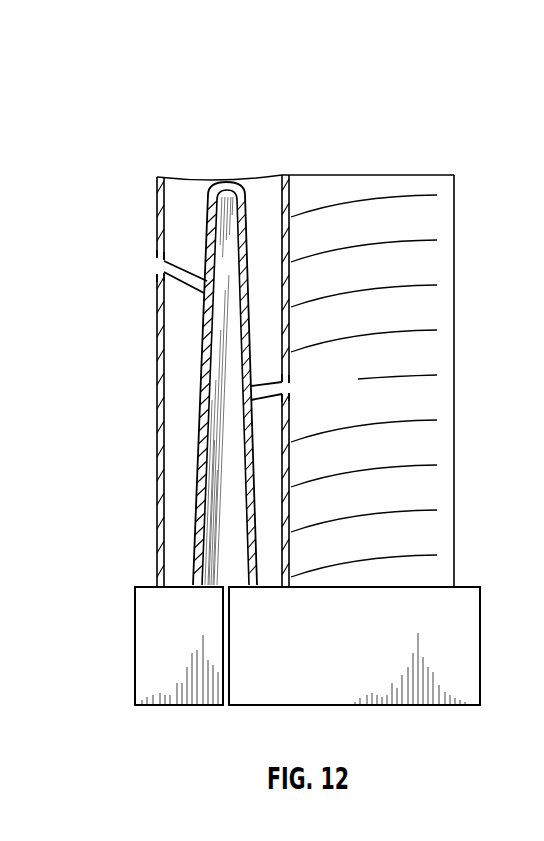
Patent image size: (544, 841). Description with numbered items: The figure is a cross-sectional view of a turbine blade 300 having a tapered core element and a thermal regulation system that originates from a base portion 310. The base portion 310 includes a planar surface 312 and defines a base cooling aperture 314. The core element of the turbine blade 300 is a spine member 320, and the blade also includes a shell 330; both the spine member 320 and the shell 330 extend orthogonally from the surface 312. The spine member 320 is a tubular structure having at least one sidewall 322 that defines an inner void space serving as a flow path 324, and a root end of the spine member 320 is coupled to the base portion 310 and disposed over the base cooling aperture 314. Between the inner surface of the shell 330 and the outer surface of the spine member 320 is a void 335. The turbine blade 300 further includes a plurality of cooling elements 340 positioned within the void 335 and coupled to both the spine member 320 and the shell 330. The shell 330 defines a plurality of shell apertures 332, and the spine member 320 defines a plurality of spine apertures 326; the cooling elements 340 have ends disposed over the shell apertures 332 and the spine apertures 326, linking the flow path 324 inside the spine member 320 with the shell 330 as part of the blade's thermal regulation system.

The turbine blade 300 is at (150, 83).
The base portion 310 is at (470, 630).
The surface 312 is at (468, 586).
The base cooling aperture 314 is at (230, 631).
The spine member 320 is at (213, 182).
The sidewall 322 is at (200, 487).
The flow path 324 is at (215, 537).
The spine apertures 326 is at (206, 279).
The shell 330 is at (441, 219).
The shell apertures 332 is at (158, 258).
The void 335 is at (259, 190).
The cooling elements 340 is at (176, 279).